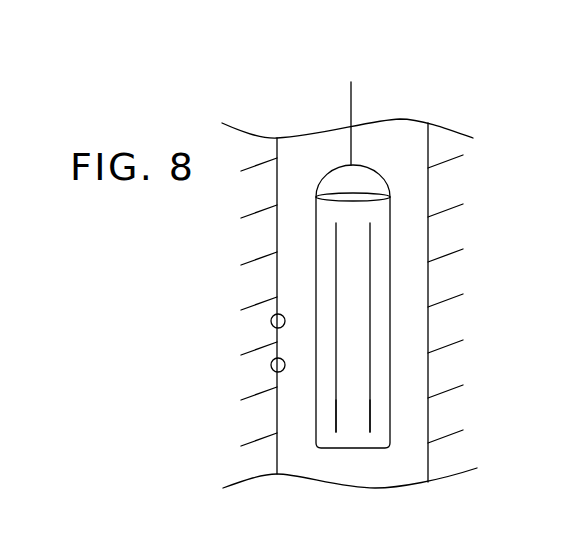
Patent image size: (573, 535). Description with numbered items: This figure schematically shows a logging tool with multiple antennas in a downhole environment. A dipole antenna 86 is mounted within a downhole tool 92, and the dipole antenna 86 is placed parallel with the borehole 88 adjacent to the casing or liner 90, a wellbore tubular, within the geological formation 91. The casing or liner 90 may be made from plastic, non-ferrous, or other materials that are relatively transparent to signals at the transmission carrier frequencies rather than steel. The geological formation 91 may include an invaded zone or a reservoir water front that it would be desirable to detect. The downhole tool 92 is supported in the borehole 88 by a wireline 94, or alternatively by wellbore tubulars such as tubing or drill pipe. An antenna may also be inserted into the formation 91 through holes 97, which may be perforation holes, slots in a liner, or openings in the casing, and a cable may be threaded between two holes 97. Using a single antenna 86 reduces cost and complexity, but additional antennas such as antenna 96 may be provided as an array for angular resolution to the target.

The dipole antenna 86 is at (335, 293).
The borehole 88 is at (412, 132).
The casing or liner 90 is at (428, 193).
The geological formation 91 is at (450, 297).
The downhole tool 92 is at (390, 373).
The wireline 94 is at (352, 165).
The antenna 96 is at (370, 427).
The holes 97 is at (270, 322).